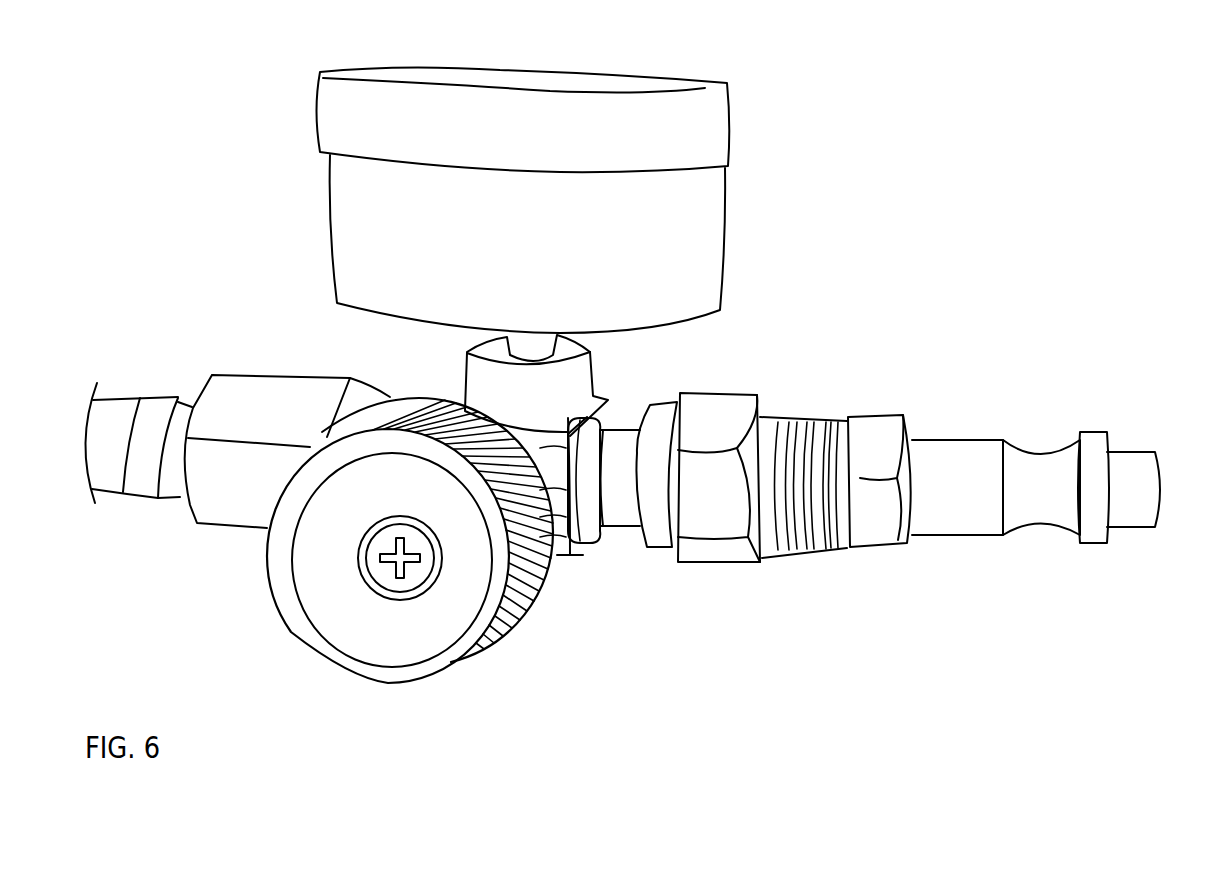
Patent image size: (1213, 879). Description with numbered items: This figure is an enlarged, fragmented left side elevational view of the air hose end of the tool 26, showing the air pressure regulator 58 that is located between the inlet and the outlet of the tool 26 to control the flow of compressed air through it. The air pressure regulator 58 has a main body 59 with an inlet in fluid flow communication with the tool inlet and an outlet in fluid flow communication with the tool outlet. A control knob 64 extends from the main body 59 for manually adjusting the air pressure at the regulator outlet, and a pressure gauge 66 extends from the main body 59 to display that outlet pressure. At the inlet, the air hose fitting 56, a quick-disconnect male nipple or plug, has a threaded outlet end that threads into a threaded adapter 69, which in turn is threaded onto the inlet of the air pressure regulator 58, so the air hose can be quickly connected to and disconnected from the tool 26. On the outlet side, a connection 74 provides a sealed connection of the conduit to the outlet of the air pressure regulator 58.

The tool 26 is at (912, 207).
The air hose fitting 56 is at (1022, 535).
The air pressure regulator 58 is at (609, 67).
The main body 59 is at (577, 557).
The control knob 64 is at (383, 687).
The pressure gauge 66 is at (720, 85).
The threaded adapter 69 is at (725, 563).
The connection 74 is at (270, 373).